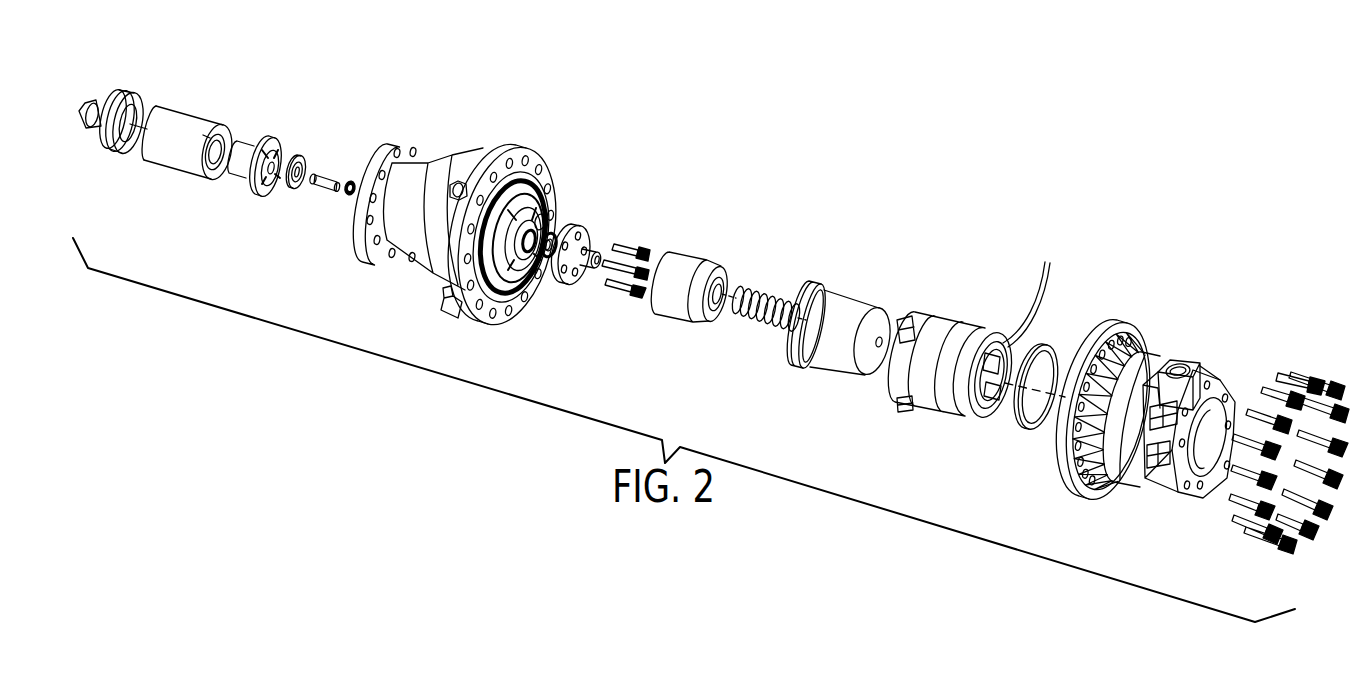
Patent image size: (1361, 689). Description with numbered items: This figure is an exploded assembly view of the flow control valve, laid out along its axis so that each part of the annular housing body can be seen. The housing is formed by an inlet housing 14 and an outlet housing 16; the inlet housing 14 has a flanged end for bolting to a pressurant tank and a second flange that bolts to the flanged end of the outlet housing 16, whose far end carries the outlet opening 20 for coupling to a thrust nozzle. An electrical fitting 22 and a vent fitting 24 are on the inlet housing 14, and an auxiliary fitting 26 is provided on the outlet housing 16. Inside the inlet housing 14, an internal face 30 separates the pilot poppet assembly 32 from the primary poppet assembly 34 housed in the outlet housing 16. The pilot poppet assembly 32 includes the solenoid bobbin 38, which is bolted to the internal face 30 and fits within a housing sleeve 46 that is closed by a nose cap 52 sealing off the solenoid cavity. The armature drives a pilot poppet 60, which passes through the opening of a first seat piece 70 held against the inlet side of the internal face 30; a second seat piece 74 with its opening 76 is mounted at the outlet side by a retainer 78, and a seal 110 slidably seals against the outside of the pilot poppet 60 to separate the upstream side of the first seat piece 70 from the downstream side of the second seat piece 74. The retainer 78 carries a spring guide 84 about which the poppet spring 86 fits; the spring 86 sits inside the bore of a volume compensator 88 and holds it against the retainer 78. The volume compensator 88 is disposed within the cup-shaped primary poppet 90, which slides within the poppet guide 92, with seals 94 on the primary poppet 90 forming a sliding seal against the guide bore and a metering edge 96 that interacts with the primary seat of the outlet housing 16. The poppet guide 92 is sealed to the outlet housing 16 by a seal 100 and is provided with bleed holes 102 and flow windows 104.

The inlet housing 14 is at (462, 160).
The outlet housing 16 is at (1160, 358).
The outlet opening 20 is at (1246, 445).
The electrical fitting 22 is at (450, 322).
The vent fitting 24 is at (458, 186).
The auxiliary fitting 26 is at (1193, 363).
The internal face 30 is at (545, 226).
The pilot poppet assembly 32 is at (293, 77).
The primary poppet assembly 34 is at (799, 254).
The bobbin 38 is at (260, 194).
The housing sleeve 46 is at (188, 120).
The nose cap 52 is at (97, 102).
The pilot poppet 60 is at (327, 190).
The first seat piece 70 is at (297, 157).
The second seat piece 74 is at (556, 236).
The opening 76 is at (553, 258).
The retainer 78 is at (587, 223).
The spring guide 84 is at (588, 278).
The poppet spring 86 is at (756, 328).
The volume compensator 88 is at (675, 312).
The primary poppet 90 is at (850, 303).
The poppet guide 92 is at (944, 381).
The seals 94 is at (801, 357).
The metering edge 96 is at (983, 417).
The seal 100 is at (1050, 347).
The bleed holes 102 is at (928, 400).
The flow windows 104 is at (1031, 292).
The seal 110 is at (351, 181).